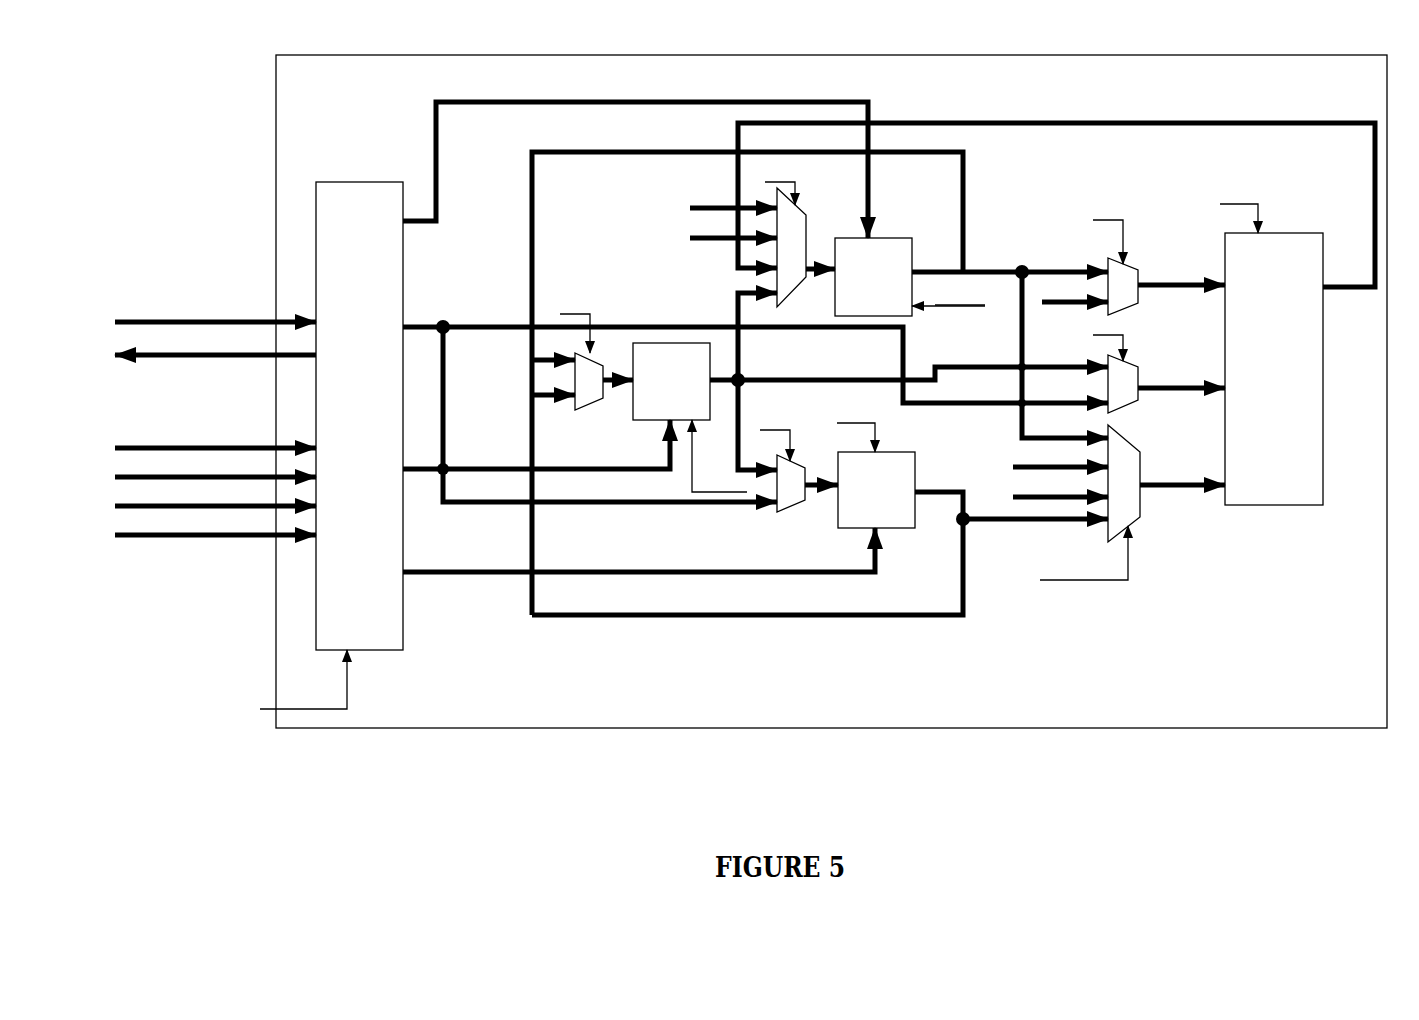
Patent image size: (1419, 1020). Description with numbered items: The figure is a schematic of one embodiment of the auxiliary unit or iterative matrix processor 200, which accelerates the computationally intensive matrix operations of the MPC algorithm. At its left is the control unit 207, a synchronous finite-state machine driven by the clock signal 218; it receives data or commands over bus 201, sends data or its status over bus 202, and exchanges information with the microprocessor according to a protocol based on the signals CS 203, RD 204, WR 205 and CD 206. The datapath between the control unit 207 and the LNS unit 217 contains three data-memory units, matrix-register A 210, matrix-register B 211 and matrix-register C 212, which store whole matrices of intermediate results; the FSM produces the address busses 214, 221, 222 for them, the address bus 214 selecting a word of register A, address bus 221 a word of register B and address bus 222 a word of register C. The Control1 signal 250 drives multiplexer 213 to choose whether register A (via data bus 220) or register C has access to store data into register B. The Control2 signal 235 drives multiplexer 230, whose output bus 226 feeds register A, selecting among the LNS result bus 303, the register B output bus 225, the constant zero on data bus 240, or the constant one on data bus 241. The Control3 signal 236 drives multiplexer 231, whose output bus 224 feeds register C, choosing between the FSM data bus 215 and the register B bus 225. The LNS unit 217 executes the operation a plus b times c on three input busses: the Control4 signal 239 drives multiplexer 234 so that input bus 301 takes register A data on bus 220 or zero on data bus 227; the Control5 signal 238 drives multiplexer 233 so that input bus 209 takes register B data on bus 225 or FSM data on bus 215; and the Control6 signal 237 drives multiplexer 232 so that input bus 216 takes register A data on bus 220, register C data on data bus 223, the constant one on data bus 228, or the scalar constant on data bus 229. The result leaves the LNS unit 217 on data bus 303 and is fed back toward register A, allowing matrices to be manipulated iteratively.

The auxiliary unit 200 is at (243, 165).
The bus 201 is at (215, 309).
The bus 202 is at (215, 342).
The CS signal 203 is at (215, 435).
The RD signal 204 is at (215, 464).
The WR signal 205 is at (215, 493).
The CD signal 206 is at (215, 522).
The control unit 207 is at (379, 627).
The data bus 209 is at (1181, 378).
The matrix-register A 210 is at (897, 253).
The matrix-register B 211 is at (660, 415).
The matrix-register C 212 is at (888, 508).
The multiplexer 213 is at (570, 378).
The address bus 214 is at (635, 98).
The data bus 215 is at (495, 324).
The data bus 216 is at (1182, 475).
The LNS unit 217 is at (1238, 255).
The clock signal 218 is at (352, 697).
The data bus 220 is at (557, 150).
The address bus 221 is at (465, 463).
The address bus 222 is at (438, 575).
The data bus 223 is at (553, 618).
The data bus 224 is at (832, 488).
The data bus 225 is at (870, 377).
The data bus 226 is at (817, 257).
The data bus 227 is at (1042, 305).
The data bus 228 is at (1012, 462).
The data bus 229 is at (1010, 495).
The multiplexer 230 is at (780, 298).
The multiplexer 231 is at (782, 508).
The multiplexer 232 is at (1138, 508).
The multiplexer 233 is at (1128, 407).
The multiplexer 234 is at (1133, 258).
The Control2 signal 235 is at (798, 187).
The Control3 signal 236 is at (793, 435).
The Control6 signal 237 is at (1085, 587).
The Control5 signal 238 is at (1127, 343).
The Control4 signal 239 is at (1120, 240).
The data bus 240 is at (682, 205).
The data bus 241 is at (682, 236).
The Control1 signal 250 is at (590, 320).
The data bus 301 is at (1181, 275).
The data bus 303 is at (1056, 205).